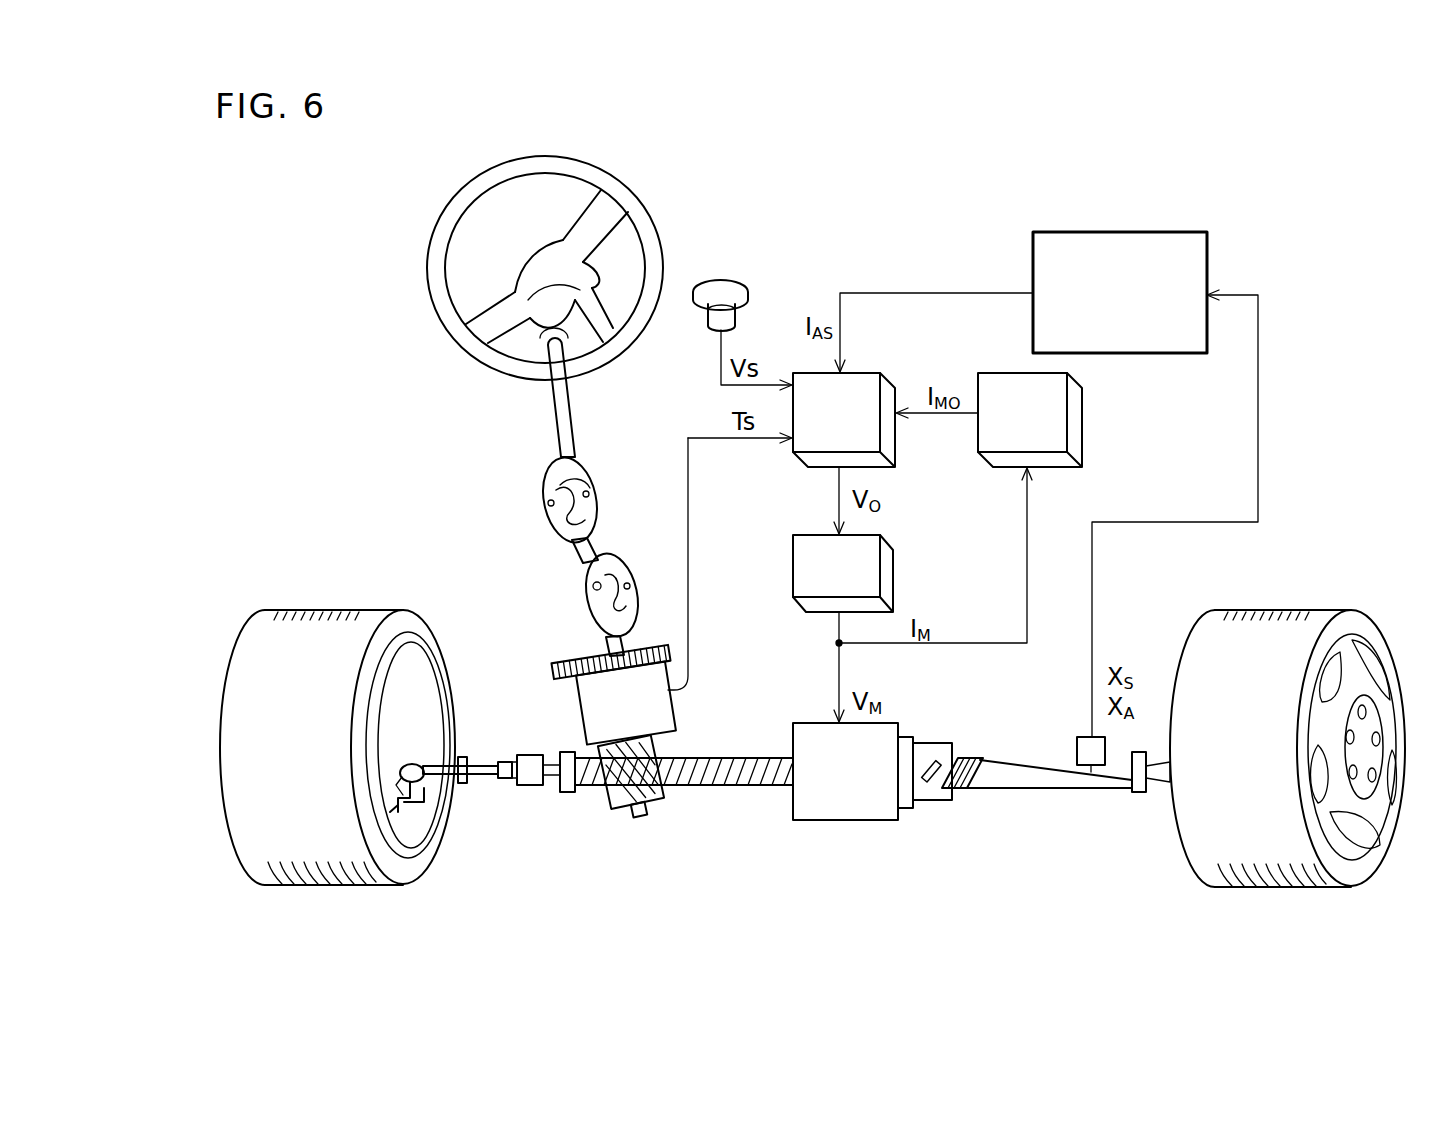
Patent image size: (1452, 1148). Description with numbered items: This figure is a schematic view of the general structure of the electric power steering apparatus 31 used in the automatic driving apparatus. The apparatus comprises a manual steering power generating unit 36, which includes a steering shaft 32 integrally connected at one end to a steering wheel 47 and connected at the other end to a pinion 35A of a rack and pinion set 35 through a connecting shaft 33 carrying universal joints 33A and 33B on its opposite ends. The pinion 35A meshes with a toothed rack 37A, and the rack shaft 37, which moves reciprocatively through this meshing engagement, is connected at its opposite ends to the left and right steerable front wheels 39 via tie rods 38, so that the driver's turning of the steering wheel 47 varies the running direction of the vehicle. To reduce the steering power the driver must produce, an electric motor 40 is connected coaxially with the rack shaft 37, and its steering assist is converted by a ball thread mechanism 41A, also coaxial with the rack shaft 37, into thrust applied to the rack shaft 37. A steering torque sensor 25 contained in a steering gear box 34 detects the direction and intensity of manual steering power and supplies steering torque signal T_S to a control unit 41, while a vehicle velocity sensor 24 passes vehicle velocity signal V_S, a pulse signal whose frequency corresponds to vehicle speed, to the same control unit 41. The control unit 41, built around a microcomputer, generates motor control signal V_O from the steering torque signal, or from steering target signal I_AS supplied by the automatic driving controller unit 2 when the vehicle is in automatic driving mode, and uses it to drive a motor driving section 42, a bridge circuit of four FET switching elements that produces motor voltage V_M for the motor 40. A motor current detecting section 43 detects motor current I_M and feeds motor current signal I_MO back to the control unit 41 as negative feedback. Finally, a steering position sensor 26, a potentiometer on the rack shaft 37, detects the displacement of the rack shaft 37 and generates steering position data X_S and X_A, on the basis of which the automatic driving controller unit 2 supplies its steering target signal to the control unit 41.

The automatic driving controller unit 2 is at (1125, 232).
The vehicle velocity sensor 24 is at (722, 282).
The steering torque sensor 25 is at (572, 716).
The steering position sensor 26 is at (1077, 750).
The electric power steering apparatus 31 is at (862, 222).
The steering shaft 32 is at (546, 400).
The connecting shaft 33 is at (593, 547).
The universal joint 33A is at (583, 473).
The universal joint 33B is at (593, 577).
The steering gear box 34 is at (612, 802).
The rack and pinion set 35 is at (592, 794).
The pinion 35A is at (657, 800).
The manual steering power generating unit 36 is at (523, 510).
The rack shaft 37 is at (1052, 778).
The toothed rack 37A is at (683, 787).
The tie rod 38 is at (490, 772).
The steerable front wheel 39 is at (305, 608).
The electric motor 40 is at (833, 807).
The control unit 41 is at (853, 372).
The ball thread mechanism 41A is at (964, 795).
The motor driving section 42 is at (858, 535).
The motor current detecting section 43 is at (1075, 418).
The steering wheel 47 is at (450, 215).